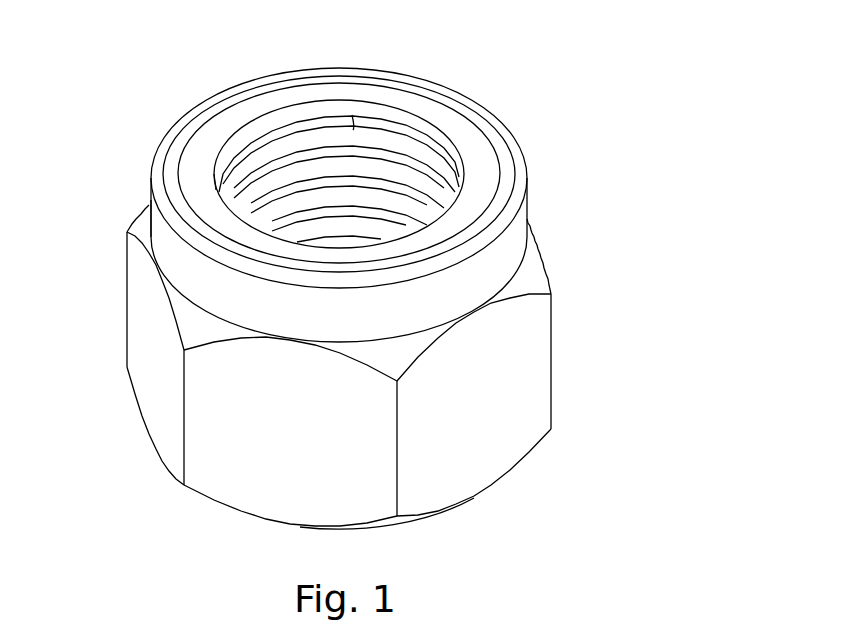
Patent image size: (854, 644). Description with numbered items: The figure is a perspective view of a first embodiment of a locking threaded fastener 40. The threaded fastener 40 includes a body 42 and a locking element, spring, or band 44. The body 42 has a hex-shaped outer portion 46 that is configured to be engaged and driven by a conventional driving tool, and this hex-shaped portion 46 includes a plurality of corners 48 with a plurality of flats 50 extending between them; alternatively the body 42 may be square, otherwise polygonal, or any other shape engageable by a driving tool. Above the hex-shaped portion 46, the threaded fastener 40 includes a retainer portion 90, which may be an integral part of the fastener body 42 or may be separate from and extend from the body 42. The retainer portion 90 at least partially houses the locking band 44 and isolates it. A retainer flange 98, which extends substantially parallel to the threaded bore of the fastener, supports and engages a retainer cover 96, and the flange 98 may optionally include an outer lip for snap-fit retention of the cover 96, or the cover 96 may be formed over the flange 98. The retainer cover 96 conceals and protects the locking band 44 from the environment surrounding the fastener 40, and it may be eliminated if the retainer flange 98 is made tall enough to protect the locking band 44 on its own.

The threaded fastener 40 is at (371, 302).
The body 42 is at (371, 384).
The locking band 44 is at (451, 166).
The hex-shaped outer portion 46 is at (468, 463).
The corners 48 is at (183, 437).
The flats 50 is at (233, 462).
The retainer portion 90 is at (512, 245).
The retainer cover 96 is at (453, 118).
The retainer flange 98 is at (173, 262).